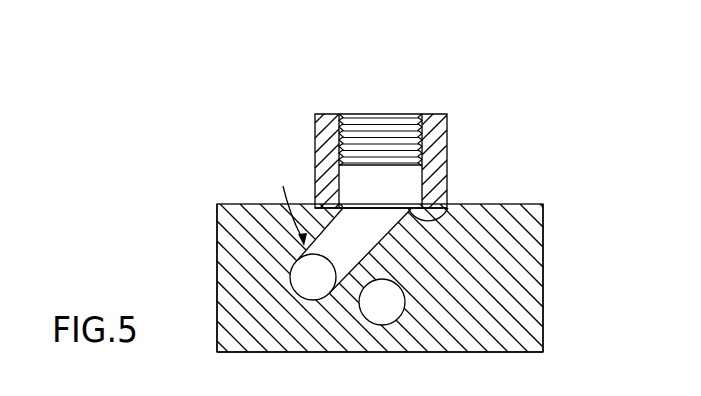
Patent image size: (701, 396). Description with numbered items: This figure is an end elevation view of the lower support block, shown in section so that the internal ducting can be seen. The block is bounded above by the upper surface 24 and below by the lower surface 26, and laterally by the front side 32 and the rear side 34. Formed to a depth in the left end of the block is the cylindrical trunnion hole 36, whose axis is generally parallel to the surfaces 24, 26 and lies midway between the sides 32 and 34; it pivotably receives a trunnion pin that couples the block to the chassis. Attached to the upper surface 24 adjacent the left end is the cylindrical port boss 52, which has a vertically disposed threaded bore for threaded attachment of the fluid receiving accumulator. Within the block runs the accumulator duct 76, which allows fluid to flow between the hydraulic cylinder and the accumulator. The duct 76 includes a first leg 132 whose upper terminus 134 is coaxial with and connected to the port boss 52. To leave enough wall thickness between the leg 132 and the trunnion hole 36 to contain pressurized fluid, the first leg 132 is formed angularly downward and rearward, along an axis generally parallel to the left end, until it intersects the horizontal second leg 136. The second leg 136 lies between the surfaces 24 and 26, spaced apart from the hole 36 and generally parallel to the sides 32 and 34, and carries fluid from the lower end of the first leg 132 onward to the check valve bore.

The upper surface 24 is at (518, 205).
The lower surface 26 is at (480, 352).
The front side 32 is at (543, 281).
The rear side 34 is at (216, 259).
The trunnion hole 36 is at (382, 313).
The port boss 52 is at (447, 150).
The accumulator duct 76 is at (289, 204).
The first leg 132 is at (402, 237).
The upper terminus 134 is at (465, 207).
The second leg 136 is at (308, 290).